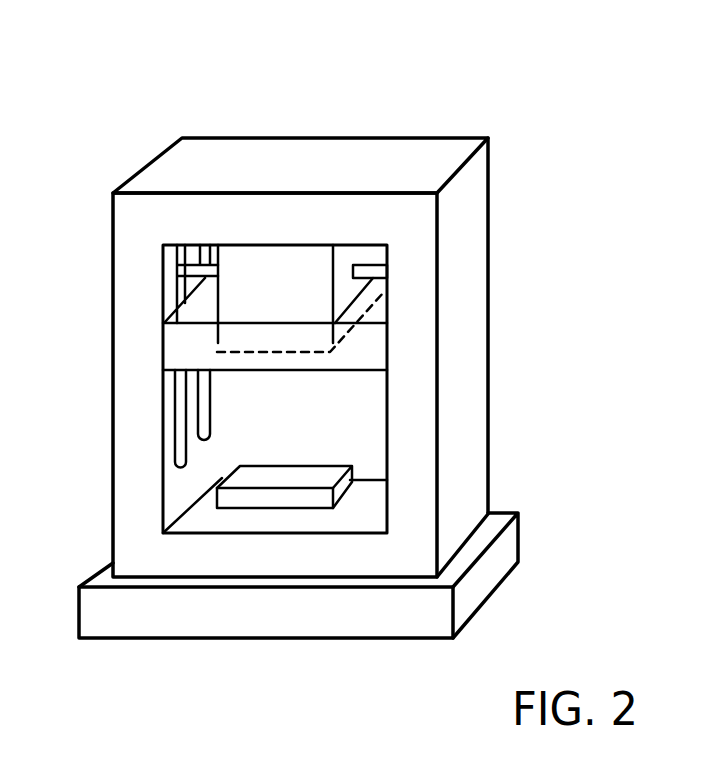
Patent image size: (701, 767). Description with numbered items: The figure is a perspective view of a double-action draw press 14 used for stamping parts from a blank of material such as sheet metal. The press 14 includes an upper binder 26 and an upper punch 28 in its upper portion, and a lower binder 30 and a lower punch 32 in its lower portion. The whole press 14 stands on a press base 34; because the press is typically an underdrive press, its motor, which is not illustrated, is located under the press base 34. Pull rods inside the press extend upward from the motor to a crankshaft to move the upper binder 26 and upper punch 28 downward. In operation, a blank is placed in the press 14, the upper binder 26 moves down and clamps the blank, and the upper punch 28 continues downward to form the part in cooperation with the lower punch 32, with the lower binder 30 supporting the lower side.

The double-action draw press 14 is at (323, 90).
The upper binder 26 is at (178, 343).
The upper punch 28 is at (250, 265).
The lower binder 30 is at (218, 557).
The lower punch 32 is at (337, 467).
The press base 34 is at (332, 618).